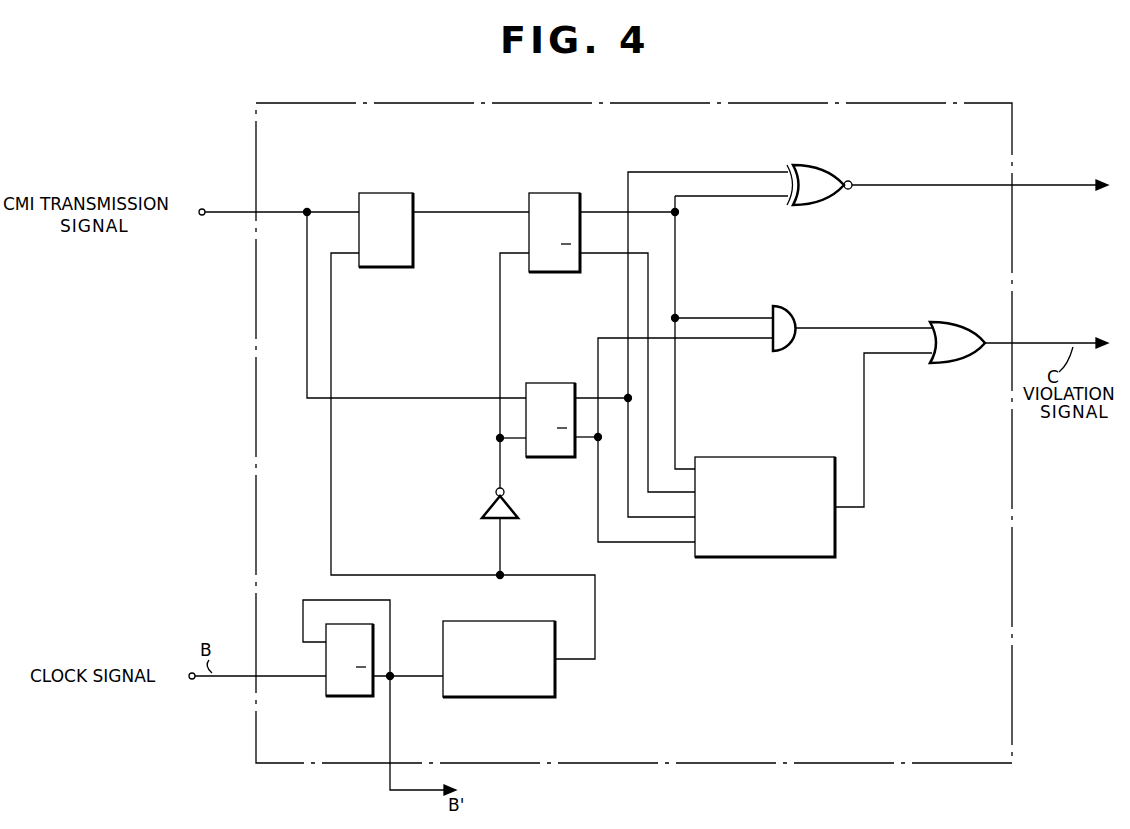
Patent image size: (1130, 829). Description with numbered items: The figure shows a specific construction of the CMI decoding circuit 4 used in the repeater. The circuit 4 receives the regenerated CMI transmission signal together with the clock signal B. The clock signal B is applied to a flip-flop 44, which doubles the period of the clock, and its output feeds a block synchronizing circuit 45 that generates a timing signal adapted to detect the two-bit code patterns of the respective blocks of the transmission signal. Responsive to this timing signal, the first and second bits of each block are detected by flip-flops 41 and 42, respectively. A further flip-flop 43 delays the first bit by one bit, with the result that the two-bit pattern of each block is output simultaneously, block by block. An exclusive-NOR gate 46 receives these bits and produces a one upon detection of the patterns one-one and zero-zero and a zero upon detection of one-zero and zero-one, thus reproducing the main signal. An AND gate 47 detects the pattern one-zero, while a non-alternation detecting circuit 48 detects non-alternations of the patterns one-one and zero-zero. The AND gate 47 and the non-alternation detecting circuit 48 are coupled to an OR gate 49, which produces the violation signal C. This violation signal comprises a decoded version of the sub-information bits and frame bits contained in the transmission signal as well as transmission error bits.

The CMI decoding circuit 4 is at (714, 102).
The flip-flop 41 is at (392, 193).
The flip-flop 42 is at (540, 383).
The flip-flop 43 is at (557, 193).
The flip-flop 44 is at (357, 697).
The block synchronizing circuit 45 is at (534, 621).
The exclusive-NOR gate 46 is at (832, 172).
The AND gate 47 is at (792, 317).
The non-alternation detecting circuit 48 is at (770, 457).
The OR gate 49 is at (957, 322).